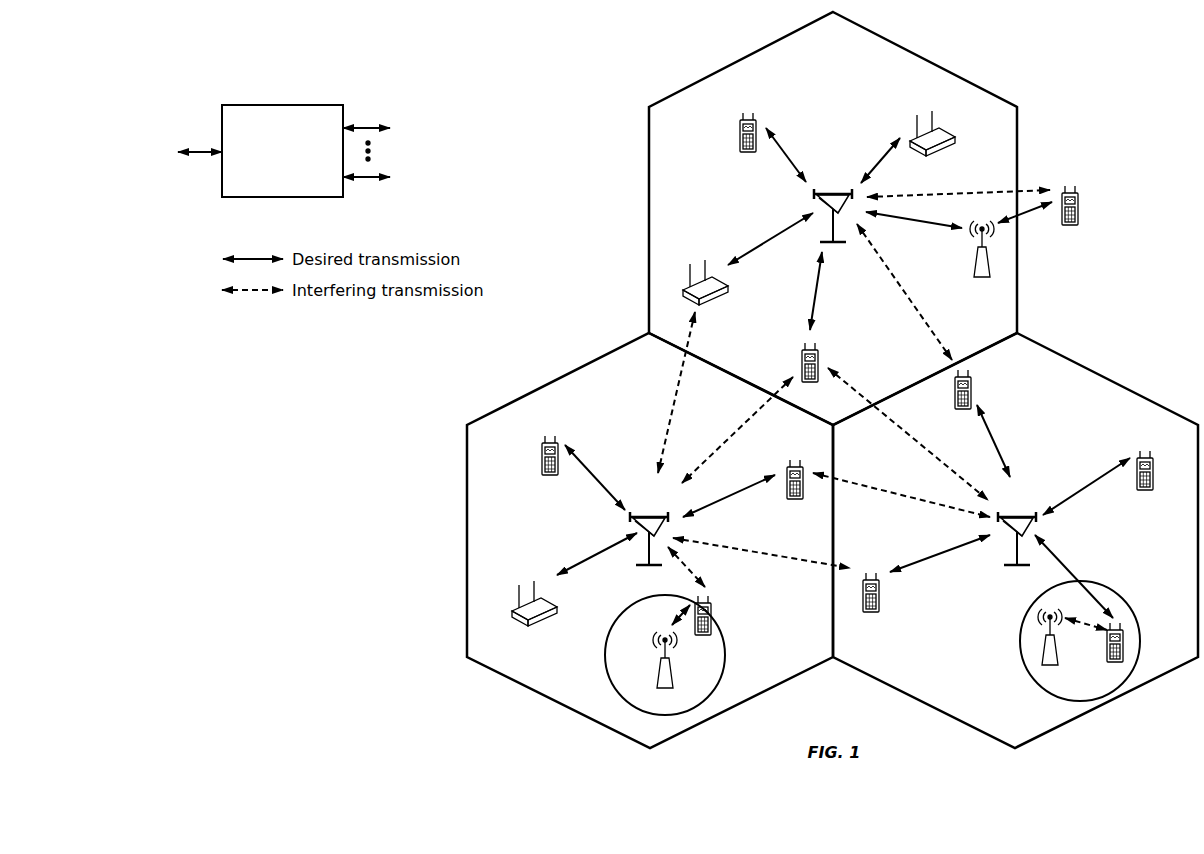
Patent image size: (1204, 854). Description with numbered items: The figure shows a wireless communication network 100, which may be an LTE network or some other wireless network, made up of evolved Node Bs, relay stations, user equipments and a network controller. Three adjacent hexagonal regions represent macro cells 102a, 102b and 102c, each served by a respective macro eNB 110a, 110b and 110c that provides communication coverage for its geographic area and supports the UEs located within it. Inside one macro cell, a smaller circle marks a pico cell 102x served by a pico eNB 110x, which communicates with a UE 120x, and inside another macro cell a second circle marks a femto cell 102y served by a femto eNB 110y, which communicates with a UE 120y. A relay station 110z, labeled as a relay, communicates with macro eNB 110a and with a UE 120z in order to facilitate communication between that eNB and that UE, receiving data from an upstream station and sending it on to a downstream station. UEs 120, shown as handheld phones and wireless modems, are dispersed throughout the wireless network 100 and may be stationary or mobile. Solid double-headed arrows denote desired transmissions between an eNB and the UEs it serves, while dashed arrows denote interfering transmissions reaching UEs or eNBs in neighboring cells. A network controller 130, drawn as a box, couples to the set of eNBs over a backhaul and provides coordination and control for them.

The wireless communication network 100 is at (1140, 72).
The macro cell 102a is at (927, 59).
The macro cell 102b is at (562, 377).
The macro cell 102c is at (1102, 377).
The pico cell 102x is at (622, 609).
The femto cell 102y is at (1116, 588).
The macro eNB 110a is at (834, 192).
The macro eNB 110b is at (645, 514).
The macro eNB 110c is at (1014, 514).
The pico eNB 110x is at (671, 678).
The femto eNB 110y is at (1057, 660).
The relay station 110z is at (974, 266).
The UE 120 is at (740, 128).
The UE 120x is at (712, 611).
The UE 120y is at (1107, 664).
The UE 120z is at (1077, 220).
The network controller 130 is at (282, 105).